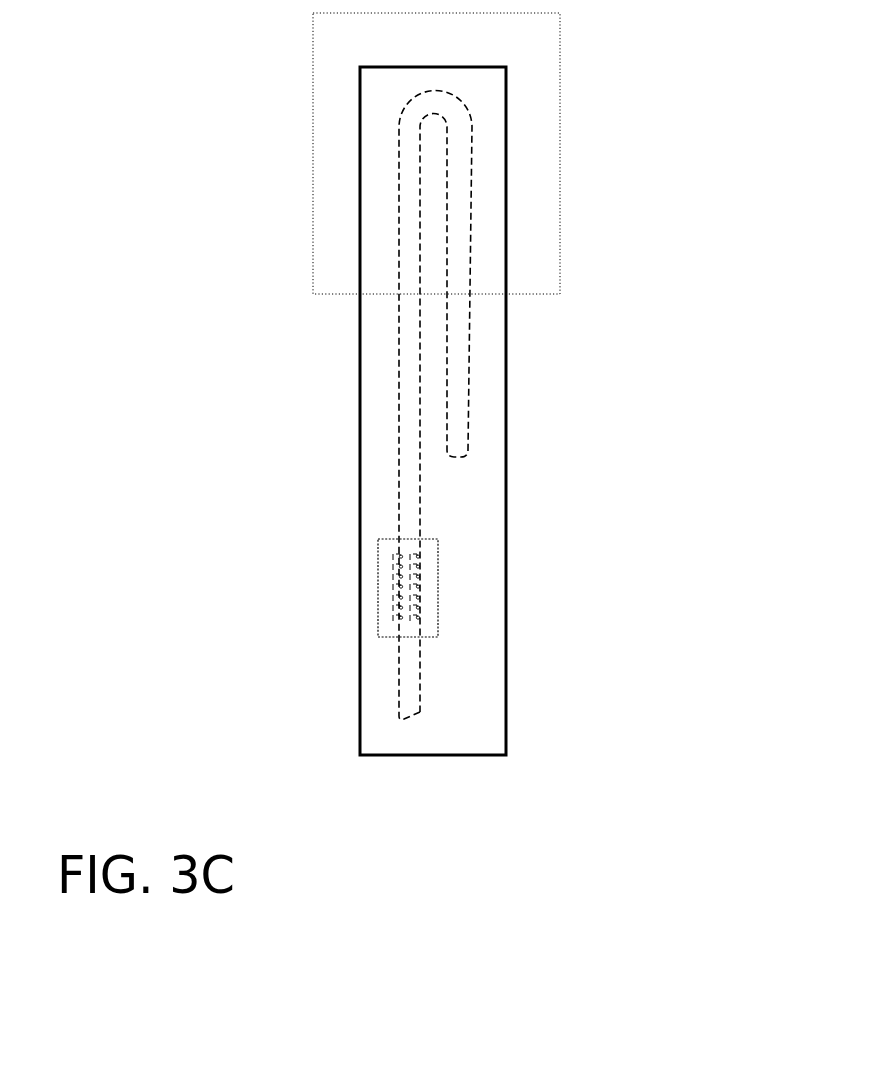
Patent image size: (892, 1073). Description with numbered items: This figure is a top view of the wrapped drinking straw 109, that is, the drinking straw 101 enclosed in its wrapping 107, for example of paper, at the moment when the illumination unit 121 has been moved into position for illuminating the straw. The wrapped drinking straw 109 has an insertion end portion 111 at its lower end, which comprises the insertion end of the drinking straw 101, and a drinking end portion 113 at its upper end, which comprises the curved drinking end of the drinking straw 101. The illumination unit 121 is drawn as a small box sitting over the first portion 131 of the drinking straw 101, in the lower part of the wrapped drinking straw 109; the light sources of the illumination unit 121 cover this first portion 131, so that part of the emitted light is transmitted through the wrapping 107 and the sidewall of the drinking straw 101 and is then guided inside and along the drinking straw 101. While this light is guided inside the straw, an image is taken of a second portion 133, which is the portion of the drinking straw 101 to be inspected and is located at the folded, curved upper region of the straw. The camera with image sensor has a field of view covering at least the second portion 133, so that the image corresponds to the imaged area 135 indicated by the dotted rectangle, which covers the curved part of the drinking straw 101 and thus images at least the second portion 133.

The drinking straw 101 is at (412, 482).
The wrapping 107 is at (468, 552).
The wrapped drinking straw 109 is at (228, 92).
The insertion end portion 111 is at (310, 452).
The drinking end portion 113 is at (307, 333).
The illumination unit 121 is at (438, 598).
The first portion 131 is at (327, 548).
The second portion 133 is at (582, 91).
The imaged area 135 is at (313, 215).